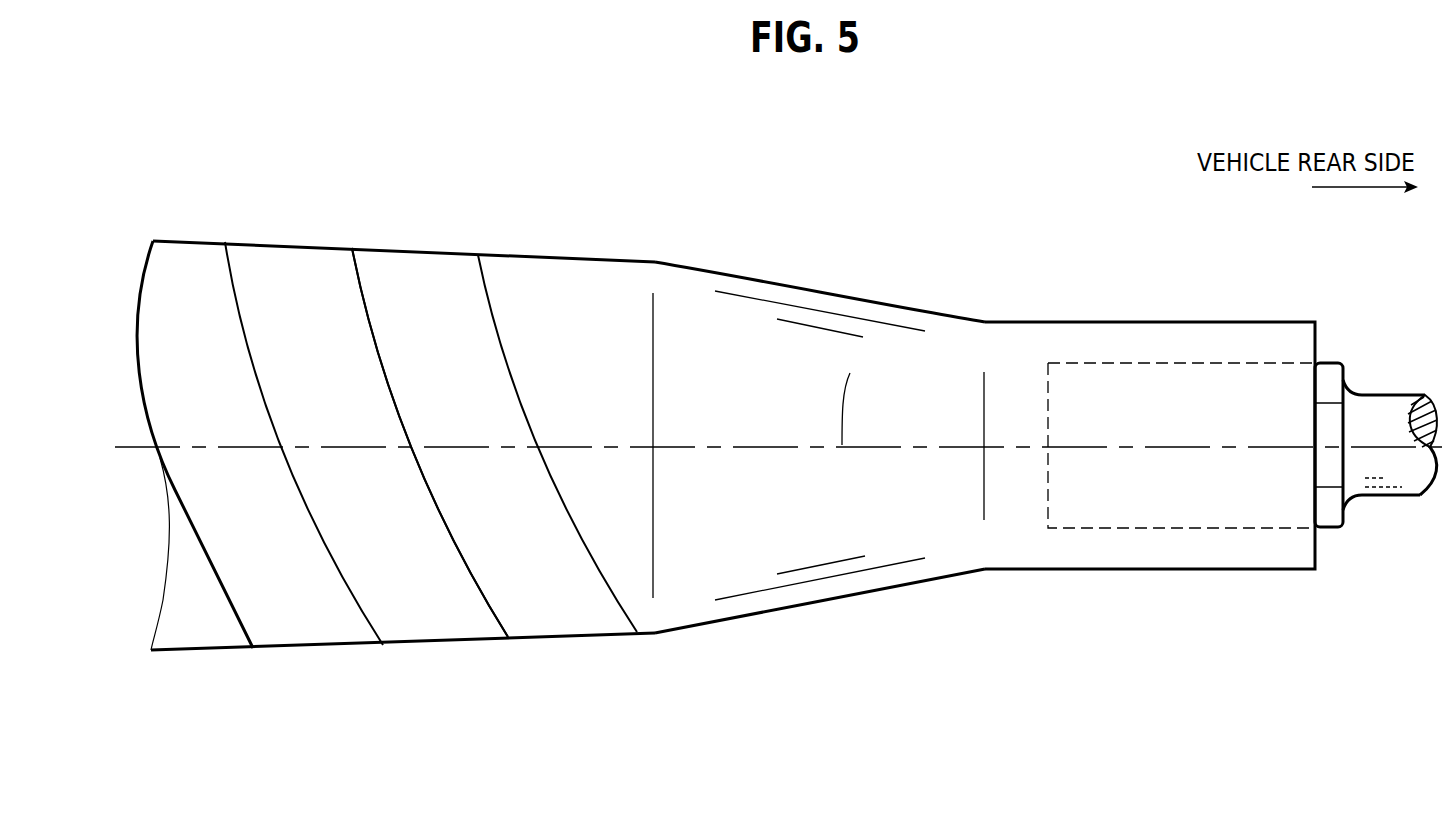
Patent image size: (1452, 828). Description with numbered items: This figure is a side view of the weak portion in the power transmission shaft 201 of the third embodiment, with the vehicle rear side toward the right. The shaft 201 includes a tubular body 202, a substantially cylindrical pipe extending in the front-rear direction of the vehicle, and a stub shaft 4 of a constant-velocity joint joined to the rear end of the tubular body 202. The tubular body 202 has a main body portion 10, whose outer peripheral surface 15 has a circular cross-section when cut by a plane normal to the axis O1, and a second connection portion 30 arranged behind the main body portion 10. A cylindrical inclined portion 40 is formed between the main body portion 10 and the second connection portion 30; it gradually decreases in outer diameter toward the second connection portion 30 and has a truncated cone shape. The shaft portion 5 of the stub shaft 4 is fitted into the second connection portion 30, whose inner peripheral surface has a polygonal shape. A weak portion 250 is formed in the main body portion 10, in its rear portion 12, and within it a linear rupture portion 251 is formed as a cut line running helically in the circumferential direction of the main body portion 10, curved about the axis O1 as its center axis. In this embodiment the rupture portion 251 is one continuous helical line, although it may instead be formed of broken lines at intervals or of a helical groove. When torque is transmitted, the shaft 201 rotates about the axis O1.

The tubular body 202 is at (330, 231).
The weak portion 250 is at (493, 231).
The power transmission shaft 201 is at (919, 206).
The shaft portion 5 is at (1233, 500).
The second connection portion 30 is at (1157, 548).
The stub shaft 4 is at (1386, 497).
The axis O1 is at (858, 363).
The main body portion 10 is at (250, 267).
The rear portion 12 is at (393, 287).
The rupture portion 251 is at (462, 562).
The outer peripheral surface 15 is at (595, 323).
The inclined portion 40 is at (823, 520).